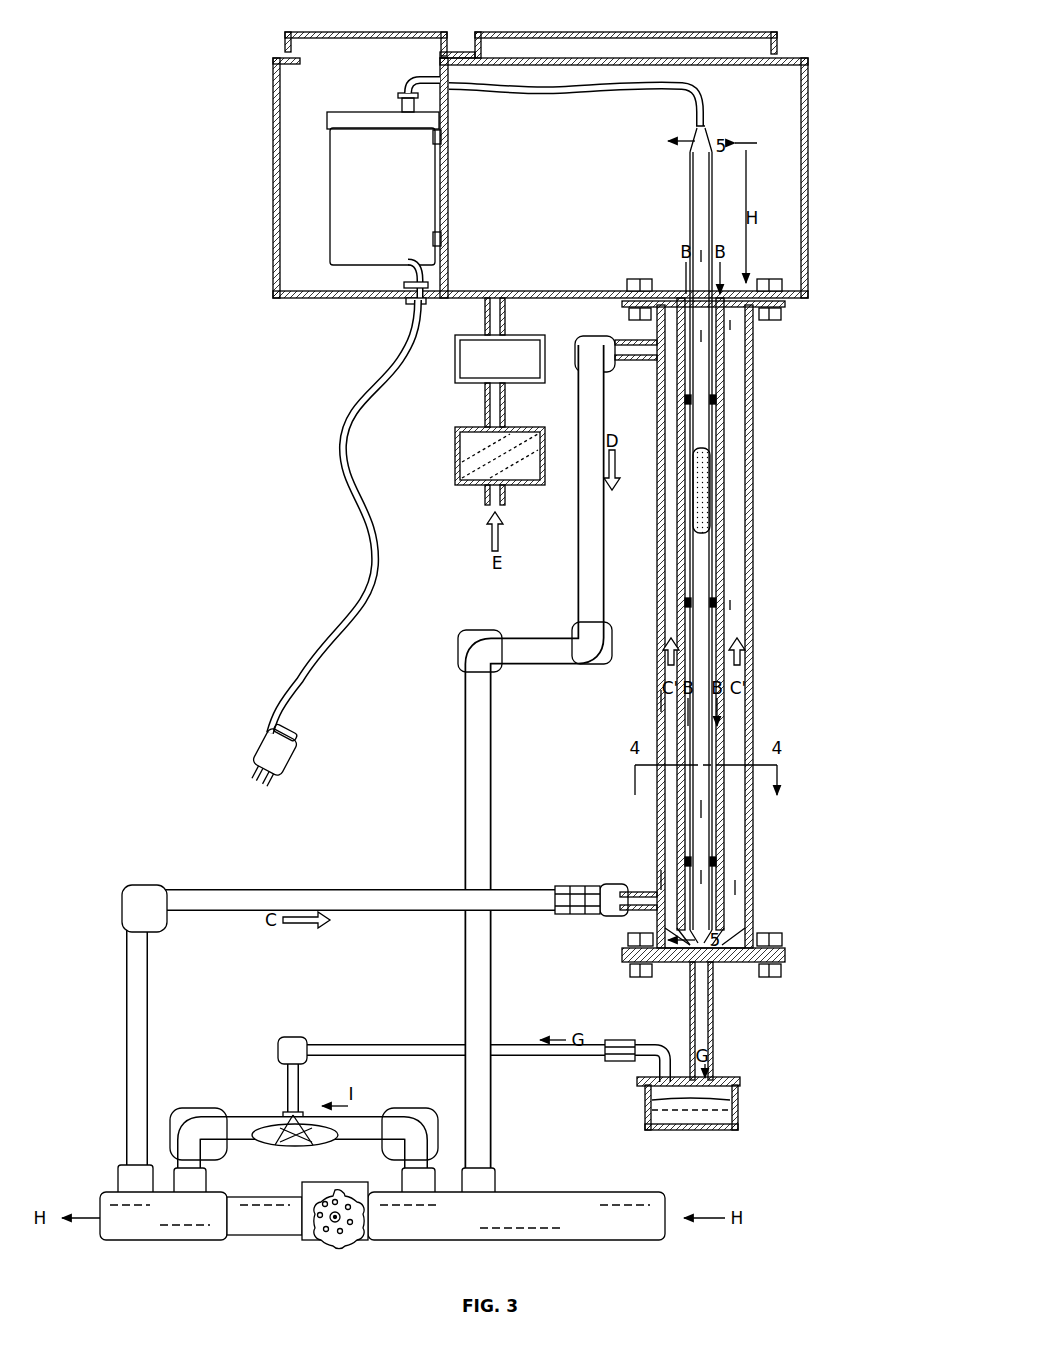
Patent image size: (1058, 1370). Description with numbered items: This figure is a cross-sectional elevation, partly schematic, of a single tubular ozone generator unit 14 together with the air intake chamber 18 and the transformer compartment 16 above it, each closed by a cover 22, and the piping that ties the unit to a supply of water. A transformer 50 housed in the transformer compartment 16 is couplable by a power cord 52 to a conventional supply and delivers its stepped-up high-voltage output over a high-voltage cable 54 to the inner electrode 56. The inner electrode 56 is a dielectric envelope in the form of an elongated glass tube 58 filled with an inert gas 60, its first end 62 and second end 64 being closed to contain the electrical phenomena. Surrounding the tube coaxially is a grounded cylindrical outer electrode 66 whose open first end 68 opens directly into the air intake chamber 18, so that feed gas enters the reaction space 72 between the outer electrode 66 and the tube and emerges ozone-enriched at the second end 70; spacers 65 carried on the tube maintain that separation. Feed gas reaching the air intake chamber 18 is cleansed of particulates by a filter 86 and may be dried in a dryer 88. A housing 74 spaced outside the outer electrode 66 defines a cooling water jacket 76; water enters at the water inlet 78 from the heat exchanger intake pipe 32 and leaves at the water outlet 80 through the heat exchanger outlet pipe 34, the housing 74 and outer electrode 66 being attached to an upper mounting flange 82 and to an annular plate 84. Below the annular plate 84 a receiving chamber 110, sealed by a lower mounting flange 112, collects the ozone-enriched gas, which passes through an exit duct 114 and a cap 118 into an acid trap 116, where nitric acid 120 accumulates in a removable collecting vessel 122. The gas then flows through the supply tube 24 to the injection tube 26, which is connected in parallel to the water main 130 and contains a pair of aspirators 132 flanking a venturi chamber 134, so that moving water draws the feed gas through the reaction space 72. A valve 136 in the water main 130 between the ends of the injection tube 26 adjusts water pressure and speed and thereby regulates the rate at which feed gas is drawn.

The tubular ozone generator unit 14 is at (765, 519).
The transformer compartment 16 is at (295, 160).
The air intake chamber 18 is at (778, 185).
The enclosure lid 22 is at (615, 30).
The supply tube 24 is at (385, 30).
The injection tube 26 is at (262, 1110).
The heat exchanger intake pipe 32 is at (340, 893).
The heat exchanger outlet pipe 34 is at (467, 753).
The transformer 50 is at (370, 225).
The power cord 52 is at (340, 480).
The high-voltage cable 54 is at (578, 100).
The inner electrode 56 is at (680, 228).
The glass tube 58 is at (703, 440).
The gas 60 is at (703, 470).
The first end 62 is at (690, 175).
The second end 64 is at (712, 935).
The spacer 65 is at (716, 400).
The outer electrode 66 is at (726, 380).
The first end 68 is at (730, 306).
The second end 70 is at (730, 890).
The reaction space 72 is at (724, 572).
The housing 74 is at (660, 637).
The cooling water jacket 76 is at (665, 703).
The water inlet 78 is at (655, 880).
The water outlet 80 is at (645, 362).
The upper mounting flange 82 is at (630, 306).
The annular plate 84 is at (625, 937).
The filter 86 is at (470, 470).
The dryer 88 is at (483, 353).
The receiving chamber 110 is at (730, 962).
The lower mounting flange 112 is at (670, 965).
The exit duct 114 is at (714, 1040).
The acid trap 116 is at (755, 1118).
The cap 118 is at (745, 1078).
The nitric acid 120 is at (672, 1122).
The collecting vessel 122 is at (712, 1128).
The water main 130 is at (155, 1225).
The aspirators 132 is at (262, 1142).
The venturi chamber 134 is at (297, 1144).
The valve 136 is at (322, 1240).